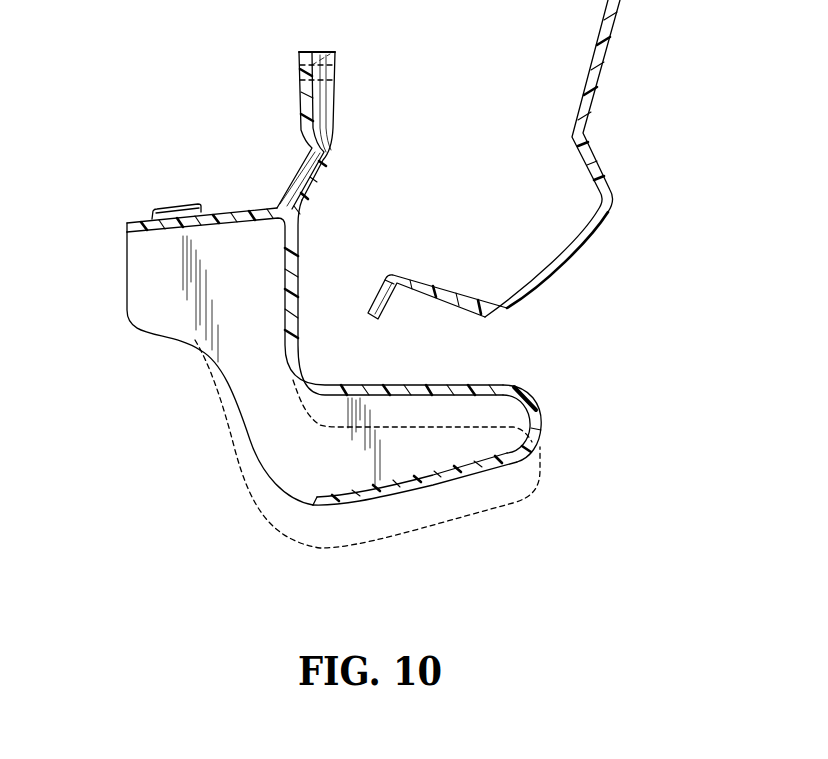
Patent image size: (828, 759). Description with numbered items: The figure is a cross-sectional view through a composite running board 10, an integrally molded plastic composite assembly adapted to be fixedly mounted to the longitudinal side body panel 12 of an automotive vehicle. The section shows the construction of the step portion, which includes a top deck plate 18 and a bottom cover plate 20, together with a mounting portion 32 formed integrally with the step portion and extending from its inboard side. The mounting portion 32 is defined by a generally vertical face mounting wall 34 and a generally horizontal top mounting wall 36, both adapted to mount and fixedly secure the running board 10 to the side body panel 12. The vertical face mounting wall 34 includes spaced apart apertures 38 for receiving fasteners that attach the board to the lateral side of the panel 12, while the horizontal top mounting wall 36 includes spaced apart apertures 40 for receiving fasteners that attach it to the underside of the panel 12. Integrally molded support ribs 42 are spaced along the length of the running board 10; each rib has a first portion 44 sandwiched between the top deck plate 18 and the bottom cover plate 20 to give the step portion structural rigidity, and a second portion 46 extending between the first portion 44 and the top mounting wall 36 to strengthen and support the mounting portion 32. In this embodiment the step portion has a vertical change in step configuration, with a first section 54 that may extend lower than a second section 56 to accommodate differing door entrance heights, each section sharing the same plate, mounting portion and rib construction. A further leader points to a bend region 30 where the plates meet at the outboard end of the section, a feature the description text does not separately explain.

The composite running board 10 is at (190, 527).
The side body panel 12 is at (594, 152).
The top deck plate 18 is at (380, 384).
The bottom cover plate 20 is at (441, 482).
The bend 30 is at (542, 420).
The mounting portion 32 is at (208, 136).
The vertical face mounting wall 34 is at (335, 96).
The horizontal top mounting wall 36 is at (220, 211).
The apertures 38 is at (336, 52).
The apertures 40 is at (173, 208).
The support ribs 42 is at (254, 360).
The first portion 44 is at (327, 475).
The second portion 46 is at (150, 290).
The first section 54 is at (513, 492).
The second section 56 is at (487, 404).